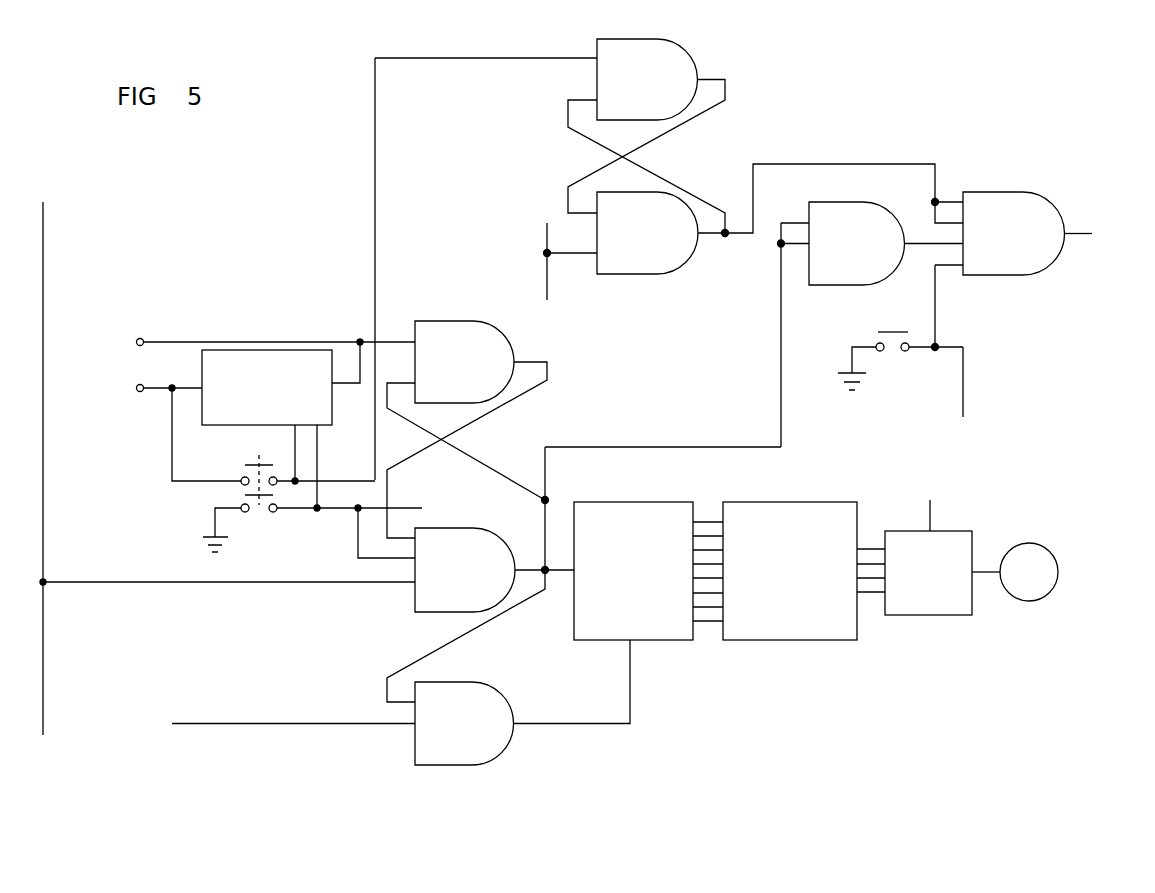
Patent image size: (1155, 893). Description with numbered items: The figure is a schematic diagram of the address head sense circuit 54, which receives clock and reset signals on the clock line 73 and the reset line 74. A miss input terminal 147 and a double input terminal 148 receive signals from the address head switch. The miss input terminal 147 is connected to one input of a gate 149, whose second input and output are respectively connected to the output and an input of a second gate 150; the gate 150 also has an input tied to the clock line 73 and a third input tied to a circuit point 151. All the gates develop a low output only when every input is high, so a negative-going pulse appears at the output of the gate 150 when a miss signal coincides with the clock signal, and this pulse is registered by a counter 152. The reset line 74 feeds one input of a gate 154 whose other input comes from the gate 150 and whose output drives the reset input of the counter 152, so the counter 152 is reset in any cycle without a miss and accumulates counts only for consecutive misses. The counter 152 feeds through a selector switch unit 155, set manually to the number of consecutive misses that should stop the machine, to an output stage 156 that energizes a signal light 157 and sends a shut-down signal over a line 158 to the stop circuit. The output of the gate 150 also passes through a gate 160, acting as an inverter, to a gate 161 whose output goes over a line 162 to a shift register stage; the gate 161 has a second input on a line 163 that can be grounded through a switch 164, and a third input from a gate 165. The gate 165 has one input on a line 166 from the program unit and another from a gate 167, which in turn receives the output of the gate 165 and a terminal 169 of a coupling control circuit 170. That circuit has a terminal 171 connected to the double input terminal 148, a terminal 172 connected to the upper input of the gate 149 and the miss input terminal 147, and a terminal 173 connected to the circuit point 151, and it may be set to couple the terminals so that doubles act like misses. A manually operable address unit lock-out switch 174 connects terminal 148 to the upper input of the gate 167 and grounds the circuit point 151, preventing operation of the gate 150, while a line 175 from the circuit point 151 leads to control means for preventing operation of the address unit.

The address head sense circuit 54 is at (982, 80).
The clock line 73 is at (43, 235).
The reset line 74 is at (228, 723).
The miss input terminal 147 is at (143, 341).
The double input terminal 148 is at (138, 396).
The gate 149 is at (497, 340).
The gate 150 is at (467, 538).
The circuit point 151 is at (355, 512).
The counter 152 is at (628, 503).
The gate 154 is at (485, 692).
The selector switch unit 155 is at (797, 503).
The output stage 156 is at (947, 540).
The signal light 157 is at (1025, 548).
The line 158 is at (933, 500).
The gate 160 is at (862, 211).
The gate 161 is at (1035, 208).
The line 162 is at (1075, 233).
The line 163 is at (963, 379).
The switch 164 is at (878, 331).
The gate 165 is at (680, 255).
The line 166 is at (547, 269).
The gate 167 is at (683, 63).
The terminal 169 is at (296, 448).
The coupling control circuit 170 is at (222, 351).
The terminal 171 is at (196, 386).
The terminal 172 is at (345, 380).
The terminal 173 is at (318, 443).
The address unit lock-out switch 174 is at (250, 462).
The line 175 is at (405, 508).